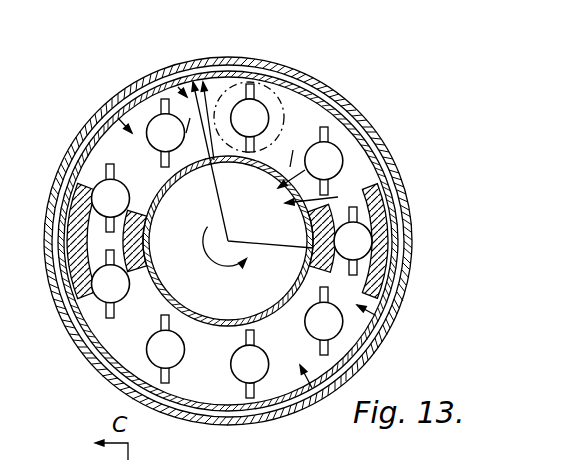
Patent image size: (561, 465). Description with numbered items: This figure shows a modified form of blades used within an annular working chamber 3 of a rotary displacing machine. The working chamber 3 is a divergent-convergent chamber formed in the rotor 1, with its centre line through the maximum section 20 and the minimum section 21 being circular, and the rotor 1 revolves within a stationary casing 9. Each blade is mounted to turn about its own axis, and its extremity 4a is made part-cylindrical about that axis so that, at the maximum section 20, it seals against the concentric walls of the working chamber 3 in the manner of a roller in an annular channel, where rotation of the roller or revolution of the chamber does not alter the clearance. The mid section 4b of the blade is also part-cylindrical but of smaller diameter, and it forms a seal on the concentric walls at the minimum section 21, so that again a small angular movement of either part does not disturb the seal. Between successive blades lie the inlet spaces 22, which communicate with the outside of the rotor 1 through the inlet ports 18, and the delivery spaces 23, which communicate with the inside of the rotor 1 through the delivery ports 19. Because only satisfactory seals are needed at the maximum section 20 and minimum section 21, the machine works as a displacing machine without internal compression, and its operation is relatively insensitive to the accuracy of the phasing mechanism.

The rotor 1 is at (239, 142).
The working chamber 3 is at (203, 387).
The blade extremity 4a is at (325, 128).
The blade mid section 4b is at (328, 159).
The stationary casing 9 is at (207, 454).
The inlet port 18 is at (91, 128).
The delivery port 19 is at (254, 161).
The maximum section 20 is at (220, 82).
The minimum section 21 is at (228, 241).
The inlet space 22 is at (150, 177).
The delivery space 23 is at (146, 350).